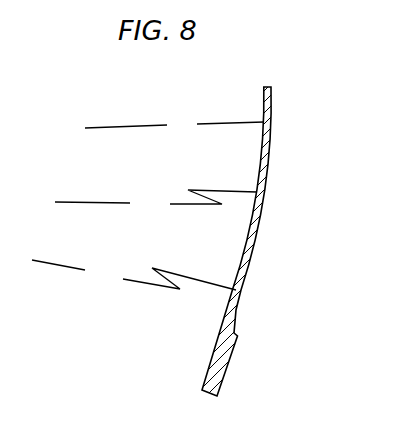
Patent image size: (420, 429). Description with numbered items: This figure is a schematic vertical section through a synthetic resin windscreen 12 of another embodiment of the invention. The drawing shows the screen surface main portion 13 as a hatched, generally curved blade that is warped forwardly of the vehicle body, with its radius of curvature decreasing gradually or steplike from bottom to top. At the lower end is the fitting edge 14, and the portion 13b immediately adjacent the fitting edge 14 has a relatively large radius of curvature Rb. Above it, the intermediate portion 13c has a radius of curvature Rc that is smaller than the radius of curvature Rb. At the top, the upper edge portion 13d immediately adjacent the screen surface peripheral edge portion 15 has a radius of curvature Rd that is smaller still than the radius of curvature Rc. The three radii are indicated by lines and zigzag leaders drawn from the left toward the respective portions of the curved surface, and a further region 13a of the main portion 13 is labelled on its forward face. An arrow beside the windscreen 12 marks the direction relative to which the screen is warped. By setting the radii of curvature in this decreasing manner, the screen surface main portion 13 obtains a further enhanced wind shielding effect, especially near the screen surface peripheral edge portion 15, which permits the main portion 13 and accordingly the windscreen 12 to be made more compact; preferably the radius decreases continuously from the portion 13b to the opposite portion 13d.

The windscreen 12 is at (290, 211).
The screen surface main portion 13 is at (270, 170).
The blade concave surface 13a is at (263, 148).
The portion immediately adjacent the fitting edge 13b is at (238, 313).
The intermediate portion 13c is at (262, 227).
The upper edge portion 13d is at (271, 112).
The fitting edge 14 is at (212, 372).
The screen surface peripheral edge portion 15 is at (271, 95).
The radius of curvature Rb is at (134, 275).
The radius of curvature Rc is at (156, 202).
The radius of curvature Rd is at (174, 124).